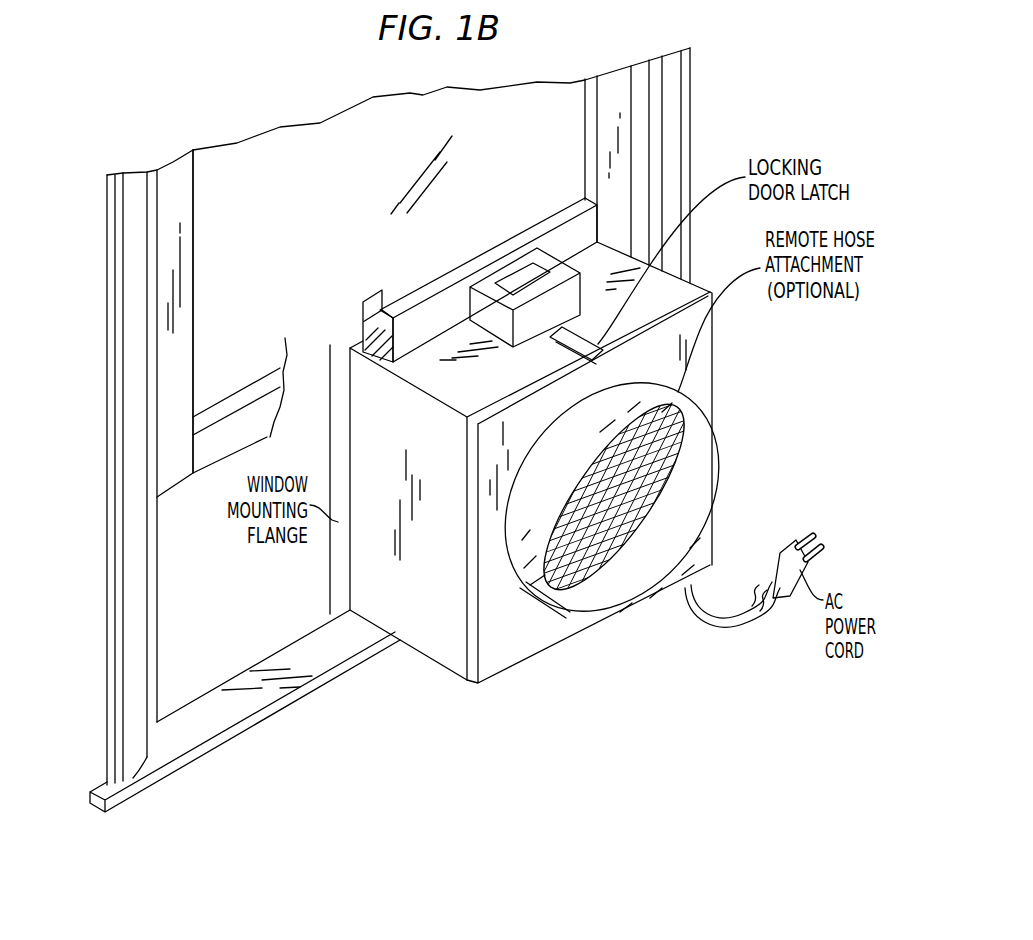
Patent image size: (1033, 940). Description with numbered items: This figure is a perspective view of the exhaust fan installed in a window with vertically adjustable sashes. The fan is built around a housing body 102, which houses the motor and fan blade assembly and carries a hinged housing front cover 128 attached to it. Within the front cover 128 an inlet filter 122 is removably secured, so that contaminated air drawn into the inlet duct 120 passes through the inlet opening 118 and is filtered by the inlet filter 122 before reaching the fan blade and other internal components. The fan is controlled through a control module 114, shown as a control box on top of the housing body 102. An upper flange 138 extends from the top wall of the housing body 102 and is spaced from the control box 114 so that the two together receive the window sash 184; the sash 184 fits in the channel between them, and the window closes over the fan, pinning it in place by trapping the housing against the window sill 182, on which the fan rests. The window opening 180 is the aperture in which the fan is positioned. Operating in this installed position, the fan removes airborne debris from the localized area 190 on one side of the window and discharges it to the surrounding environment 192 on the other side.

The housing body 102 is at (447, 656).
The control module 114 is at (563, 268).
The inlet opening 118 is at (648, 507).
The inlet duct 120 is at (605, 608).
The inlet filter 122 is at (665, 412).
The hinged housing front cover 128 is at (488, 676).
The upper flange 138 is at (345, 335).
The window opening 180 is at (163, 644).
The window sill 182 is at (190, 741).
The sash 184 is at (163, 408).
The localized area 190 is at (772, 726).
The surrounding environment 192 is at (233, 594).